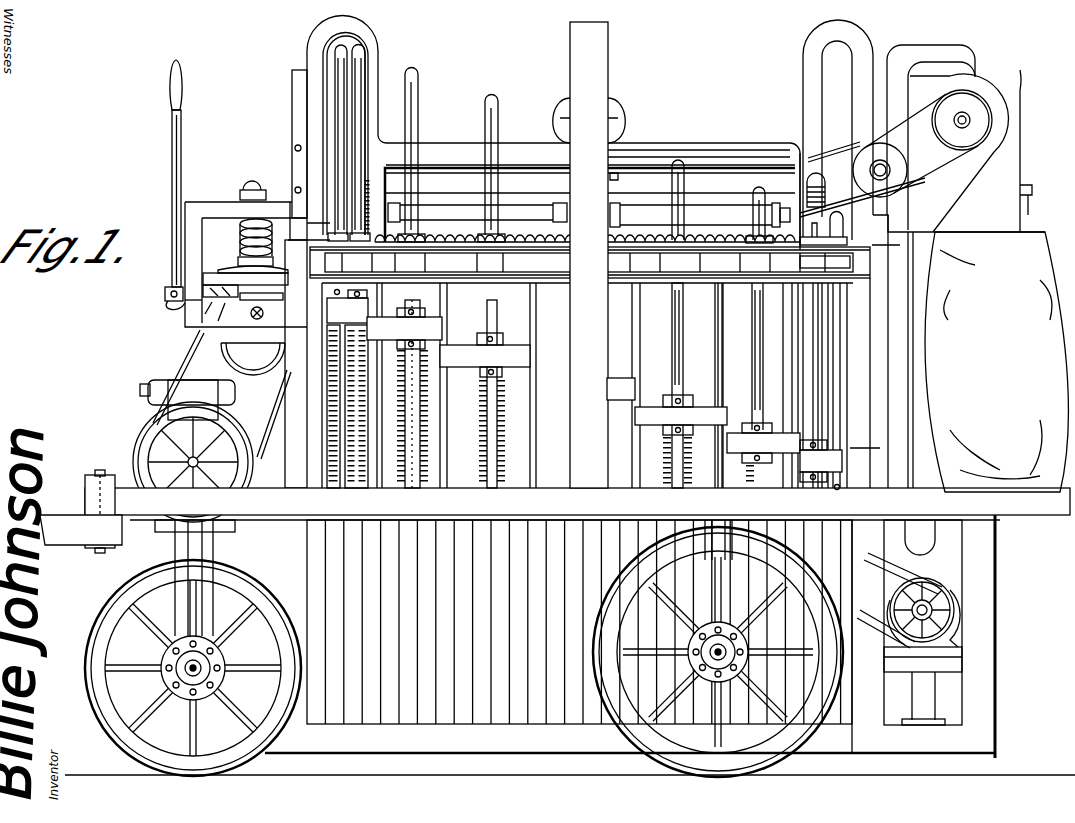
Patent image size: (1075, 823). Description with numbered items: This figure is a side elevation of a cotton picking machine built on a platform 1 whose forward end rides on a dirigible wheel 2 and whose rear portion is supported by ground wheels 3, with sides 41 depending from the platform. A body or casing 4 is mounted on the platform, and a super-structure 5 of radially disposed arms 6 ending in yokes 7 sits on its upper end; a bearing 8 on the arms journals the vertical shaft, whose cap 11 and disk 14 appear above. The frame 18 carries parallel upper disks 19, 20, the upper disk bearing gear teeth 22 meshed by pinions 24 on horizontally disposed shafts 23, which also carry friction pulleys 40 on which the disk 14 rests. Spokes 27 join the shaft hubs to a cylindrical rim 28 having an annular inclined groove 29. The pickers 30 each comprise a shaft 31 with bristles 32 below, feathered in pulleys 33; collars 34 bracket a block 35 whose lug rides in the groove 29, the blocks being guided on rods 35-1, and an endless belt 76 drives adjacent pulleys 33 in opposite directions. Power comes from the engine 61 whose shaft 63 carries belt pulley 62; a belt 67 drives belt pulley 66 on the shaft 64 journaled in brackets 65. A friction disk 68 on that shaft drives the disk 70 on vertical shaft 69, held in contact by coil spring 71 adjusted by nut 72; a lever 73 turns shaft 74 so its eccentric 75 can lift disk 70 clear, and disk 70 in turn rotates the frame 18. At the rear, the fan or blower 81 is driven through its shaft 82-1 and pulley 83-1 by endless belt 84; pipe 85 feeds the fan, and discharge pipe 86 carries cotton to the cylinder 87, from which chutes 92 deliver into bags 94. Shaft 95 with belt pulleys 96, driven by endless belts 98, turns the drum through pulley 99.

The platform 1 is at (305, 522).
The dirigible wheel 2 is at (152, 580).
The ground wheels 3 is at (618, 592).
The body or casing 4 is at (298, 478).
The super-structure 5 is at (317, 181).
The radially disposed arms 6 is at (440, 150).
The yokes 7 is at (312, 52).
The bearing 8 is at (618, 147).
The cap 11 is at (622, 100).
The disk 14 is at (705, 188).
The frame 18 is at (372, 478).
The upper disk 19 is at (782, 250).
The disk 20 is at (840, 290).
The gear teeth 22 is at (634, 240).
The horizontally disposed shafts 23 is at (722, 225).
The pinions 24 is at (822, 192).
The spokes 27 is at (648, 388).
The cylindrical rim 28 is at (662, 385).
The annular inclined groove 29 is at (710, 405).
The pickers 30 is at (440, 462).
The picker shaft 31 is at (420, 85).
The bristles or brushes 32 is at (405, 462).
The pulleys 33 is at (415, 262).
The collars 34 is at (497, 335).
The block 35 is at (430, 320).
The vertically disposed rods 35-1 is at (788, 386).
The friction pulleys 40 is at (778, 232).
The sides 41 is at (579, 622).
The engine 61 is at (150, 455).
The belt pulley 62 is at (150, 400).
The engine shaft 63 is at (178, 484).
The shaft 64 is at (255, 350).
The brackets 65 is at (185, 300).
The belt pulley 66 is at (240, 335).
The belt 67 is at (172, 382).
The friction disk 68 is at (200, 288).
The vertical shaft 69 is at (257, 264).
The disk 70 is at (228, 264).
The coil spring 71 is at (245, 222).
The nut 72 is at (246, 188).
The lever 73 is at (172, 147).
The shaft 74 is at (205, 305).
The eccentric 75 is at (262, 303).
The endless belt 76 is at (815, 263).
The fan or blower 81 is at (955, 612).
The fan shaft 82-1 is at (930, 600).
The pulley 83-1 is at (955, 622).
The endless belt 84 is at (940, 640).
The pipe 85 is at (928, 705).
The discharge pipe 86 is at (865, 545).
The cylinder 87 is at (970, 95).
The chutes 92 is at (966, 138).
The bags or receptacles 94 is at (996, 362).
The shaft 95 is at (905, 172).
The belt pulleys 96 is at (880, 150).
The endless belts 98 is at (893, 200).
The pulley 99 is at (978, 114).